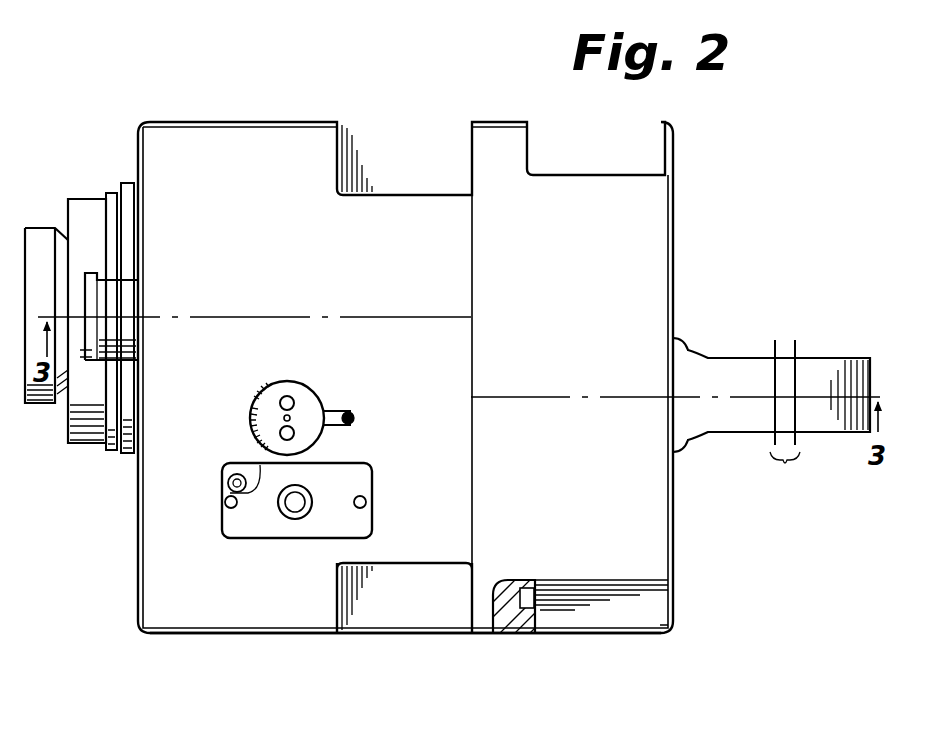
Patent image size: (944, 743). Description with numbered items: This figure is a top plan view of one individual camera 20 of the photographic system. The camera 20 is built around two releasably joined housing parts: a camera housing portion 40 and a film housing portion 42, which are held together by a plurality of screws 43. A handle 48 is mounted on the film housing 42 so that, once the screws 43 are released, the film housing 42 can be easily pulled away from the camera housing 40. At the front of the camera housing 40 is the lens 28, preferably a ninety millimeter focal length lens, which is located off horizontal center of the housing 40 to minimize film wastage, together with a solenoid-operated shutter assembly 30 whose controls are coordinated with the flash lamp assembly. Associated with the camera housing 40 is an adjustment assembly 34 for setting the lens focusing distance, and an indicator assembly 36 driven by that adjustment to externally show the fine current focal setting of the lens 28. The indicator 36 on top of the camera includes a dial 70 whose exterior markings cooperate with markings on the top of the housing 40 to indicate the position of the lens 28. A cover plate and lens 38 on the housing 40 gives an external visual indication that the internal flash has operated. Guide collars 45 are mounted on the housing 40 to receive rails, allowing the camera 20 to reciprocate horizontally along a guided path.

The camera 20 is at (647, 143).
The lens 28 is at (42, 410).
The shutter assembly 30 is at (88, 247).
The adjustment assembly 34 is at (119, 305).
The indicator assembly 36 is at (296, 379).
The cover plate and lens 38 is at (272, 547).
The camera housing portion 40 is at (405, 648).
The film housing portion 42 is at (642, 640).
The screws 43 is at (538, 152).
The guide collars 45 is at (428, 131).
The handle 48 is at (740, 357).
The dial 70 is at (264, 391).